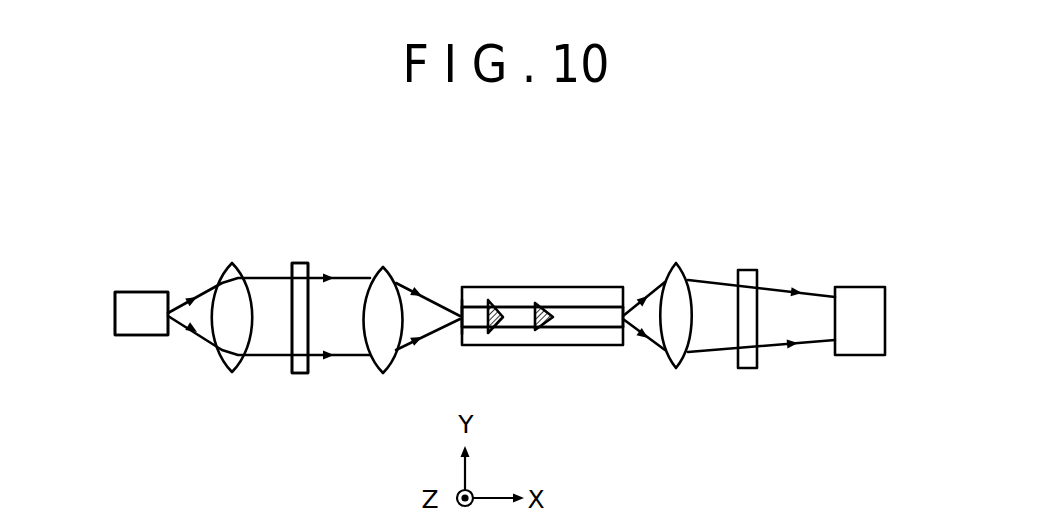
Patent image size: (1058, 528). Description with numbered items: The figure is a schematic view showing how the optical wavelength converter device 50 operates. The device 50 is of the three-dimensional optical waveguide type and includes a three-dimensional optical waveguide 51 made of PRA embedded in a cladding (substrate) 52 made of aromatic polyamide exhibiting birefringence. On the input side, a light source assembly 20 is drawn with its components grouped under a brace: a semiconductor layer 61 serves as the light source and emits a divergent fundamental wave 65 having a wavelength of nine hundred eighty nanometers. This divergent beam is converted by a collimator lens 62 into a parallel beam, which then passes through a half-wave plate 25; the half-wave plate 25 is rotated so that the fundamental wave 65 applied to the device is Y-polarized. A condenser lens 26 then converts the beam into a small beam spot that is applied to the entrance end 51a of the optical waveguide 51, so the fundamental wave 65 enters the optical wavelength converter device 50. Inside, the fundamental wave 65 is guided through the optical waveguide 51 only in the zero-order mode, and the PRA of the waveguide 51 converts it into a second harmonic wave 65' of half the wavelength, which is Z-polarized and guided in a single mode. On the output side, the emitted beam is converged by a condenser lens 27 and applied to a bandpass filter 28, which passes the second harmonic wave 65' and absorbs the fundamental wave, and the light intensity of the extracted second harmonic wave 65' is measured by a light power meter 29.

The light source unit 20 is at (123, 193).
The semiconductor layer 61 is at (147, 300).
The collimator lens 62 is at (232, 262).
The λ/2 plate 25 is at (304, 262).
The condenser lens 26 is at (368, 283).
The fundamental wave 65 is at (352, 348).
The optical wavelength converter device 50 is at (556, 262).
The three-dimensional optical waveguide 51 is at (597, 320).
The entrance end 51a is at (458, 320).
The cladding (substrate) 52 is at (607, 293).
The second harmonic wave 65' is at (661, 290).
The condenser lens 27 is at (677, 368).
The bandpass filter 28 is at (753, 368).
The light power meter 29 is at (865, 347).